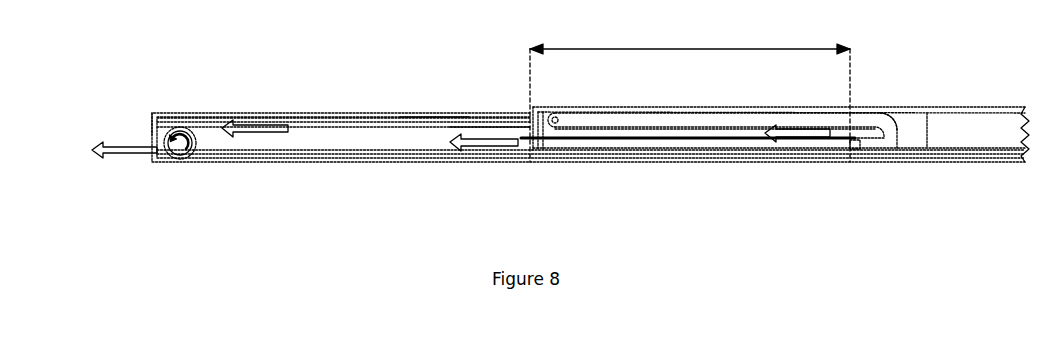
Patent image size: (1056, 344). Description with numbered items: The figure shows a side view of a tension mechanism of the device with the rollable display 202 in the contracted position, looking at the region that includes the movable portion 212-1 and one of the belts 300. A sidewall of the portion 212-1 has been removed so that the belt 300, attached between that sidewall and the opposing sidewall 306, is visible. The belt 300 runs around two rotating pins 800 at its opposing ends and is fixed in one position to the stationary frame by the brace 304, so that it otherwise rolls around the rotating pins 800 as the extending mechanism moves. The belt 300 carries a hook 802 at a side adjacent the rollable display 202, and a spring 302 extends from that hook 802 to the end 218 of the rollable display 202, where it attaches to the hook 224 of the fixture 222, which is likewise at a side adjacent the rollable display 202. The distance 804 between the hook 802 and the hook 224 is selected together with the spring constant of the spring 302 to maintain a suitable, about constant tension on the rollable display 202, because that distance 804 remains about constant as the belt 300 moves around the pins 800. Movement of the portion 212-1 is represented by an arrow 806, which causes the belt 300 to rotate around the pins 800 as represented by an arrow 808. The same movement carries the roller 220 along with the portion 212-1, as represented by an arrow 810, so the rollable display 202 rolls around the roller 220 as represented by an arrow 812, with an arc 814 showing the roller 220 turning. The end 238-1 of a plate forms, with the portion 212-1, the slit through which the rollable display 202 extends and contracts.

The rollable display 202 is at (318, 125).
The portion 212-1 is at (250, 160).
The end of the rollable display 218 is at (440, 128).
The roller 220 is at (178, 156).
The fixture 222 is at (485, 128).
The hook 224 is at (530, 147).
The end of the plate 238-1 is at (150, 130).
The belt 300 is at (765, 110).
The spring 302 is at (645, 148).
The brace 304 is at (608, 108).
The opposing sidewall 306 is at (565, 148).
The rotating pins 800 is at (560, 115).
The hook 802 is at (850, 150).
The distance 804 is at (635, 49).
The arrow 806 is at (460, 148).
The arrow 808 is at (790, 140).
The arrow 810 is at (115, 158).
The arrow 812 is at (270, 125).
The arc 814 is at (185, 128).